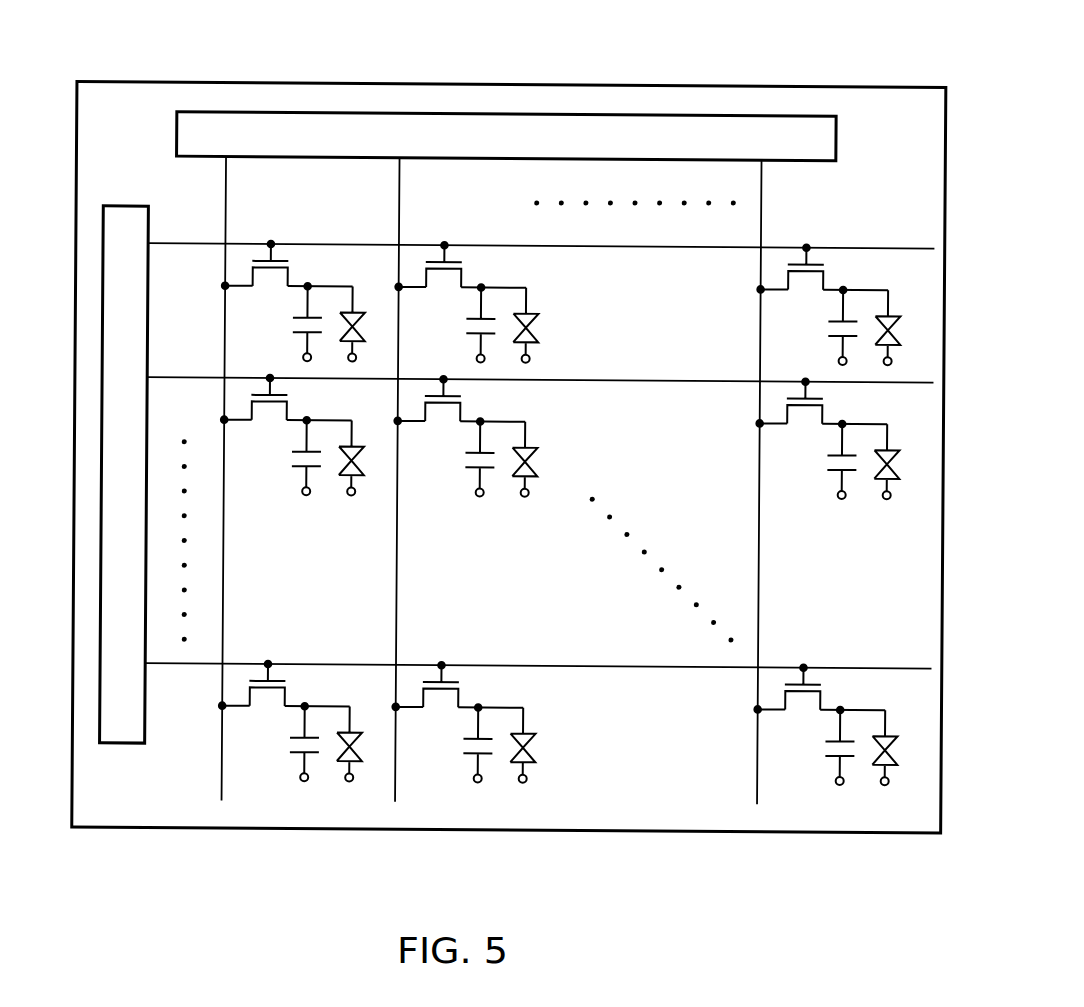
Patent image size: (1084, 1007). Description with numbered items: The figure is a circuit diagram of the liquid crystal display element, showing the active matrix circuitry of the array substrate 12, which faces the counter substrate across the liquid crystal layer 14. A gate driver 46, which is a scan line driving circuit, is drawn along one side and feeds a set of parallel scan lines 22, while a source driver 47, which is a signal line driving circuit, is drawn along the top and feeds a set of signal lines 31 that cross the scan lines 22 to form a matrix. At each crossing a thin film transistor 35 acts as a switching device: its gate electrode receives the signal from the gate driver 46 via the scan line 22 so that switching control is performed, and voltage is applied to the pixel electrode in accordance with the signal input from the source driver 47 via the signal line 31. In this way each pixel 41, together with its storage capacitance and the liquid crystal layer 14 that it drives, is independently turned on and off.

The array substrate 12 is at (757, 30).
The liquid crystal layer 14 is at (632, 535).
The scan line 22 is at (172, 246).
The signal line 31 is at (222, 179).
The thin film transistor 35 is at (536, 488).
The pixel 41 is at (348, 262).
The gate driver 46 is at (102, 283).
The source driver 47 is at (605, 114).